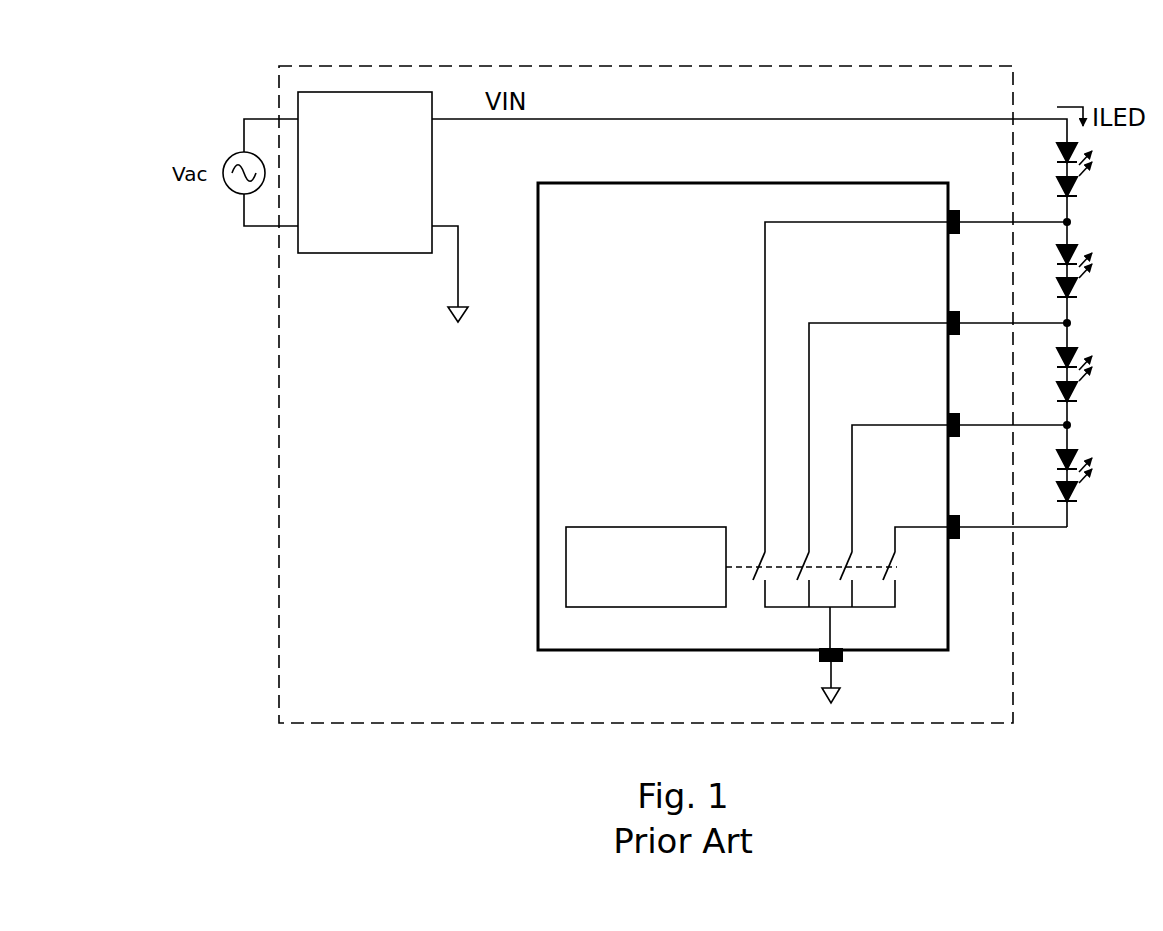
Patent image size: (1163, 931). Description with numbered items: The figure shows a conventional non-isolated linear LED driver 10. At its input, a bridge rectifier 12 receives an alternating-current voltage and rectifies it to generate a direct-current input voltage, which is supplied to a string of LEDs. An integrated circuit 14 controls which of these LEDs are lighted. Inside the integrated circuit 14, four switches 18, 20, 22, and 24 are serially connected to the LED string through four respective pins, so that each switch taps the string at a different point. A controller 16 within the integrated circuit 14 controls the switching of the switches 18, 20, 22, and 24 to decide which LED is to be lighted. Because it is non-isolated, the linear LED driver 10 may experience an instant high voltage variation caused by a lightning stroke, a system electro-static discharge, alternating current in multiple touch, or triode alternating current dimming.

The non-isolated linear LED driver 10 is at (1013, 612).
The bridge rectifier 12 is at (365, 253).
The integrated circuit 14 is at (742, 183).
The controller 16 is at (645, 527).
The switch 18 is at (752, 556).
The switch 20 is at (795, 556).
The switch 22 is at (838, 556).
The switch 24 is at (881, 556).